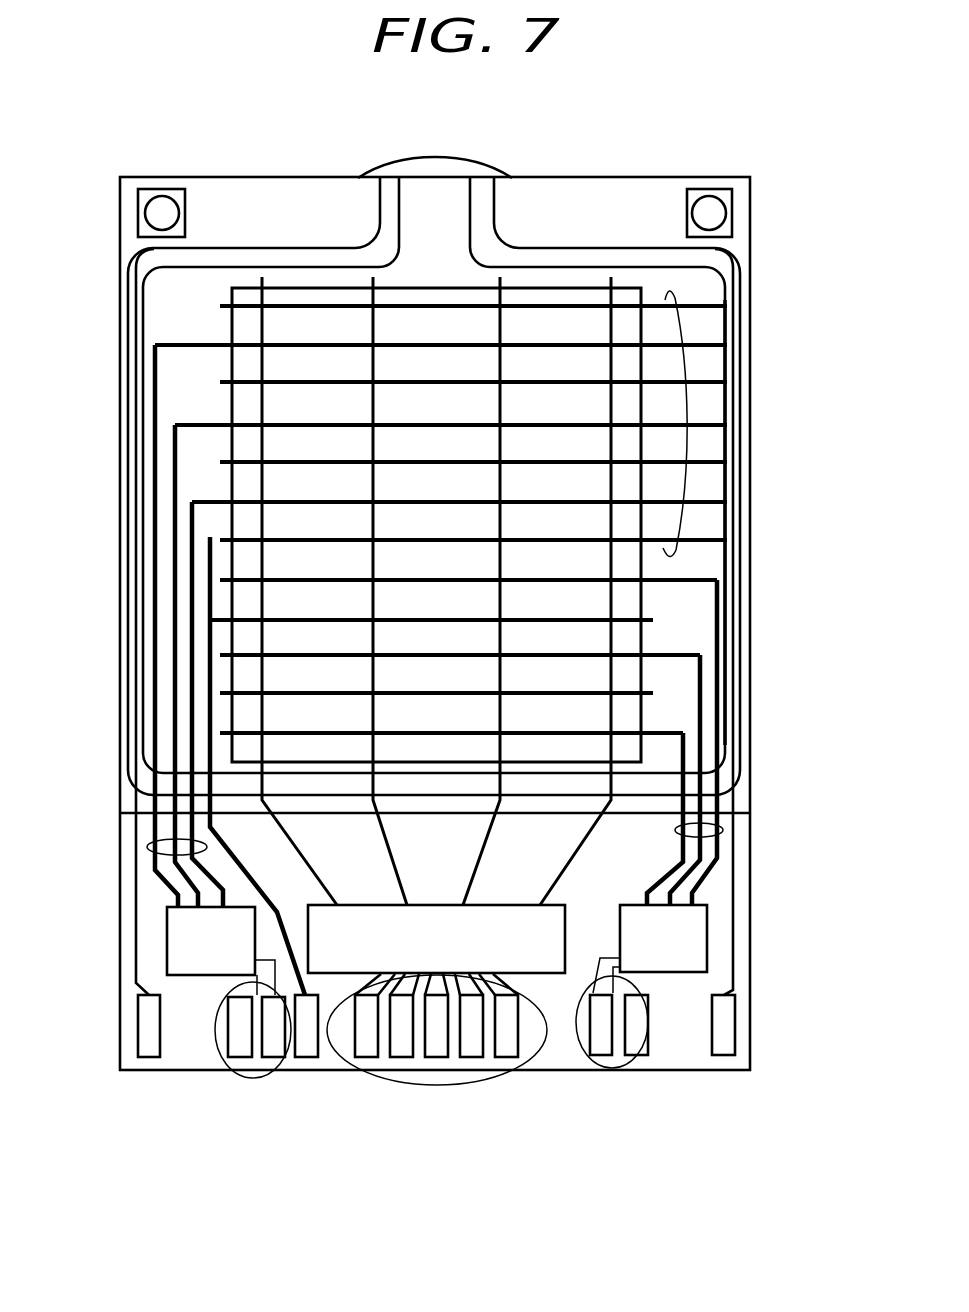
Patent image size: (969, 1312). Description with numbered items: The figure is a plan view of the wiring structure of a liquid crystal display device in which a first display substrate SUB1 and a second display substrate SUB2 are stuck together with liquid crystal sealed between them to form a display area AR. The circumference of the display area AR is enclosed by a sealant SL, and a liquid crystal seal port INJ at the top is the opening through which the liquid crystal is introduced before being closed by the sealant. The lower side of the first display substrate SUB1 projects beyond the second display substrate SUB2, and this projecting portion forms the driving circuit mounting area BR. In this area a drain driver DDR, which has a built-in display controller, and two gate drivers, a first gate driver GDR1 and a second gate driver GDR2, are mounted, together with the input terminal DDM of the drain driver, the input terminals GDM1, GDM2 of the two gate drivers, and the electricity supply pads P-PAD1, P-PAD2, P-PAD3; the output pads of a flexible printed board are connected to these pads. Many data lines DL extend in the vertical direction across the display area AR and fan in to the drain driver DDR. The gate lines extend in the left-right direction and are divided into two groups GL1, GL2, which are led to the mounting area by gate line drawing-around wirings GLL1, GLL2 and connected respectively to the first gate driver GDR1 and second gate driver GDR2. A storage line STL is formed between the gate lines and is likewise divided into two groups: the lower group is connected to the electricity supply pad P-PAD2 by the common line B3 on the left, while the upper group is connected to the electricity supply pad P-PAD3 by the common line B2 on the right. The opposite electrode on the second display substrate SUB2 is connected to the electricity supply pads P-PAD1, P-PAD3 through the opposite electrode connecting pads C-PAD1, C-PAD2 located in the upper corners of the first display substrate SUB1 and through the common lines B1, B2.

The liquid crystal seal port INJ is at (425, 178).
The opposite electrode connecting pad C-PAD1 is at (186, 193).
The opposite electrode connecting pad C-PAD2 is at (687, 219).
The sealant SL is at (302, 248).
The display area AR is at (415, 288).
The common line B1 is at (140, 858).
The common line B2 is at (752, 241).
The common line B3 is at (203, 748).
The gate line group GL1 is at (200, 502).
The gate line group GL2 is at (224, 735).
The storage line STL is at (684, 357).
The first display substrate SUB1 is at (135, 826).
The second display substrate SUB2 is at (127, 805).
The gate line drawing-around wiring GLL1 is at (150, 860).
The gate line drawing-around wiring GLL2 is at (724, 831).
The data line DL is at (280, 846).
The driving circuit mounting area BR is at (760, 813).
The first gate driver GDR1 is at (221, 951).
The drain driver DDR is at (436, 939).
The second gate driver GDR2 is at (650, 949).
The electricity supply pad P-PAD1 is at (150, 1057).
The electricity supply pad P-PAD2 is at (310, 1057).
The electricity supply pad P-PAD3 is at (723, 1055).
The input terminal GDM1 is at (253, 1078).
The input terminal GDM2 is at (588, 1067).
The input terminal DDM is at (467, 1084).